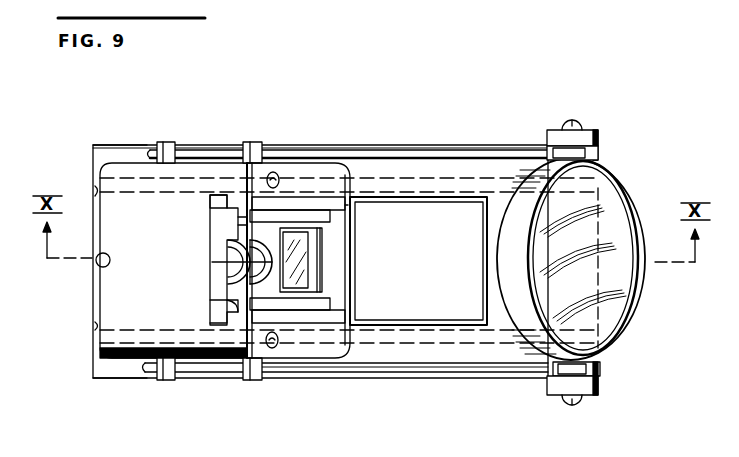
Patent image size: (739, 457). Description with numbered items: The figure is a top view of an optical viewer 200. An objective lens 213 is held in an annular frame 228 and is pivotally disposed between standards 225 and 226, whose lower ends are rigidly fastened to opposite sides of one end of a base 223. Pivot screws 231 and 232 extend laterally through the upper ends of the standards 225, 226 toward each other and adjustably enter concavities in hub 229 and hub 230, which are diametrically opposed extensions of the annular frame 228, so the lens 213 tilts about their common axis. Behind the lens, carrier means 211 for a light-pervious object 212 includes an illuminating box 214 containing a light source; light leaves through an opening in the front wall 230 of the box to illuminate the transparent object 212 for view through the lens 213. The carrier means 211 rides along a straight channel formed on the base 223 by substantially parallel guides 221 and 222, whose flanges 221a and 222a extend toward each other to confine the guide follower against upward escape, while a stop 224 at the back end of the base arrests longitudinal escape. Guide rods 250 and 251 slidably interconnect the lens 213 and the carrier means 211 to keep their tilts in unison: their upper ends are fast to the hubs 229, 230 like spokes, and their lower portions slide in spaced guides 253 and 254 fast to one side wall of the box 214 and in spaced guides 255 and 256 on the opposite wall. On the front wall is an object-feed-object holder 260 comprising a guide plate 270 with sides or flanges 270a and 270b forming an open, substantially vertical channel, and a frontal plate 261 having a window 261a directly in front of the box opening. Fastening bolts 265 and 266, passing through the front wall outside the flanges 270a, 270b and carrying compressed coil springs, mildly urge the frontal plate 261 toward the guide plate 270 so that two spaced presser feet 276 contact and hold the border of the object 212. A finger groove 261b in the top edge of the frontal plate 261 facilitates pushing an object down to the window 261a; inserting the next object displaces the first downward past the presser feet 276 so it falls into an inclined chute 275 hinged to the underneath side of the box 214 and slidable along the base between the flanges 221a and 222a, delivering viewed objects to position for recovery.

The optical viewer 200 is at (446, 112).
The carrier means 211 is at (203, 350).
The light-pervious object 212 is at (240, 262).
The objective lens 213 is at (608, 215).
The illuminating box 214 is at (122, 163).
The guide 221 is at (150, 330).
The flange 221a is at (97, 326).
The guide 222 is at (154, 193).
The flange 222a is at (97, 192).
The base 223 is at (125, 378).
The stop 224 is at (103, 268).
The standard 225 is at (600, 386).
The standard 226 is at (548, 138).
The annular frame 228 is at (647, 296).
The hub 229 is at (600, 369).
The hub 230 is at (600, 152).
The pivot screw 231 is at (575, 406).
The pivot screw 232 is at (572, 118).
The guide rod 250 is at (400, 366).
The guide rod 251 is at (397, 150).
The guide 253 is at (172, 380).
The guide 254 is at (253, 380).
The guide 255 is at (173, 142).
The guide 256 is at (252, 142).
The object-feed-object holder 260 is at (328, 160).
The frontal plate 261 is at (333, 284).
The window 261a is at (322, 245).
The finger groove 261b is at (248, 272).
The fastening bolt 265 is at (278, 346).
The fastening bolt 266 is at (279, 176).
The guide plate 270 is at (210, 232).
The flange 270a is at (210, 308).
The flange 270b is at (210, 201).
The chute 275 is at (455, 310).
The presser feet 276 is at (345, 222).